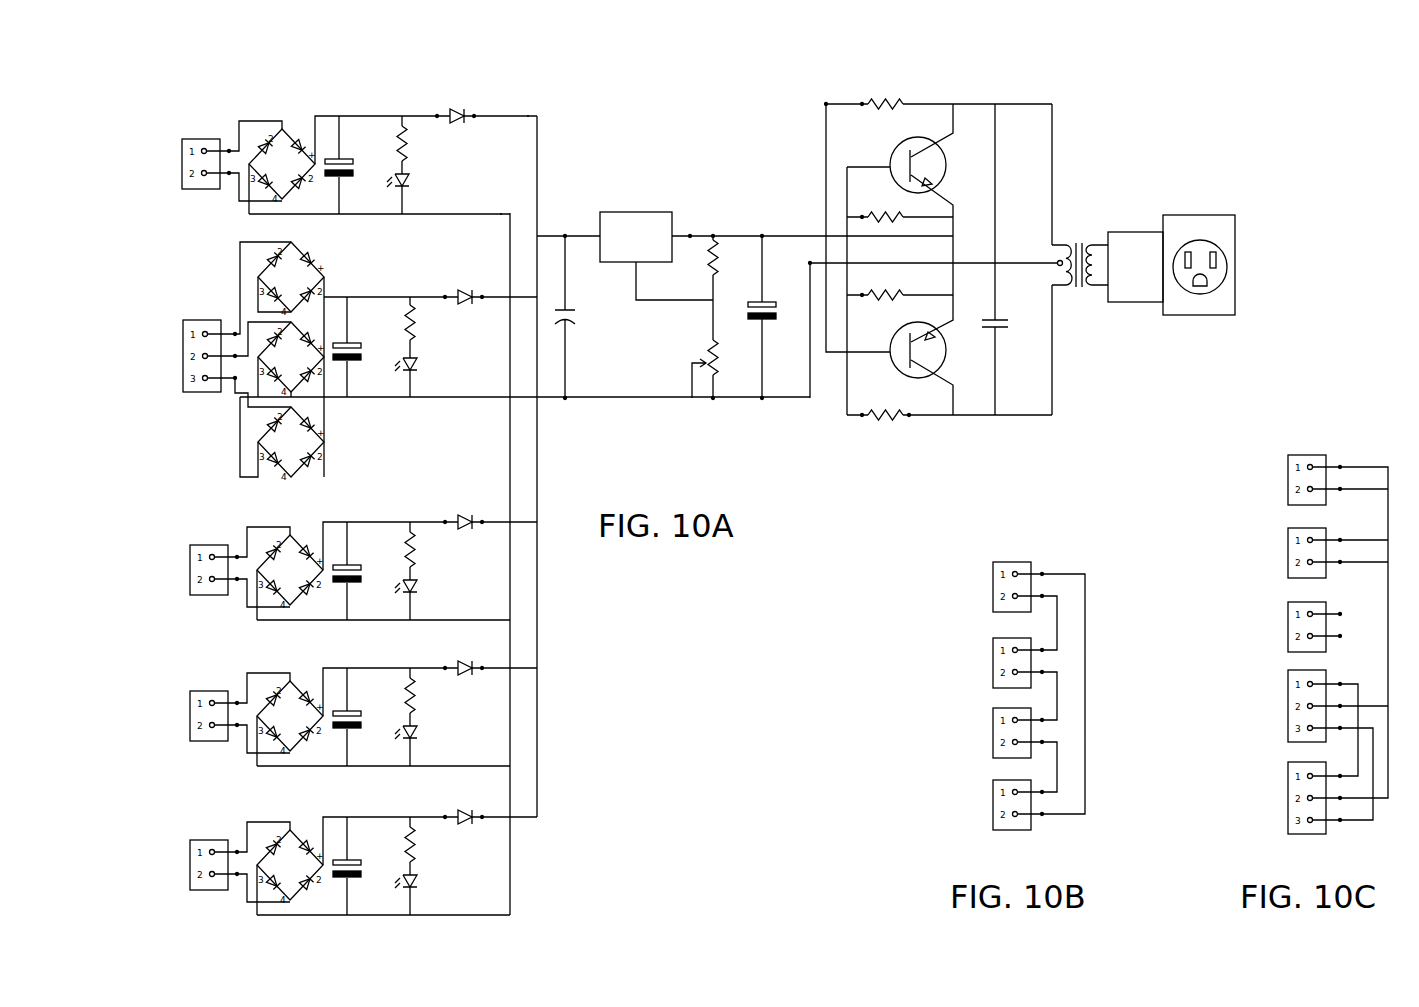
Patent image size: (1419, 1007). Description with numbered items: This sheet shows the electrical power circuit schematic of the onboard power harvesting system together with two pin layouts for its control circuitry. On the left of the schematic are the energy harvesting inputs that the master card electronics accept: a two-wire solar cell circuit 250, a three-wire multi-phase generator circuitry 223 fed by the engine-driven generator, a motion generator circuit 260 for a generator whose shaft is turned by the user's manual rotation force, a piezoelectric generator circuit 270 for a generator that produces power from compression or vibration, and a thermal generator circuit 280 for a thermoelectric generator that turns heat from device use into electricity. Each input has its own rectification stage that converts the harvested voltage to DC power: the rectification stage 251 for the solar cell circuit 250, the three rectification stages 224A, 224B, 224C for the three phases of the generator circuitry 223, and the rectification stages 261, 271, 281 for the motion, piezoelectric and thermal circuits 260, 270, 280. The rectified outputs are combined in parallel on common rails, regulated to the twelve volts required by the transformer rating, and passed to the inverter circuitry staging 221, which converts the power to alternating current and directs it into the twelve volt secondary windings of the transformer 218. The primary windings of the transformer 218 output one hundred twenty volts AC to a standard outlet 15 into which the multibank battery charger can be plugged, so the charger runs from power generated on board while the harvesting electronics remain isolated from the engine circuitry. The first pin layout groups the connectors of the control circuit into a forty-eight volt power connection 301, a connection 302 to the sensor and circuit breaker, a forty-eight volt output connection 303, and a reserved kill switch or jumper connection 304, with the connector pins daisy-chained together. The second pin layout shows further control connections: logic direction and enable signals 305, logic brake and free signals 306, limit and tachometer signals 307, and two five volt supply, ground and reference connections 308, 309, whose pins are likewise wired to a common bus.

In FIG. 10A, the solar cell circuit 250 is at (172, 80).
In FIG. 10A, the rectification stage 251 is at (296, 132).
In FIG. 10A, the generator circuitry 223 is at (172, 225).
In FIG. 10A, the rectification stage 224A is at (321, 260).
In FIG. 10A, the rectification stage 224B is at (308, 378).
In FIG. 10A, the rectification stage 224C is at (308, 470).
In FIG. 10A, the motion generator circuit 260 is at (172, 497).
In FIG. 10A, the rectification stage 261 is at (300, 543).
In FIG. 10A, the piezoelectric generator circuit 270 is at (172, 645).
In FIG. 10A, the rectification stage 271 is at (302, 688).
In FIG. 10A, the thermal generator circuit 280 is at (172, 782).
In FIG. 10A, the rectification stage 281 is at (302, 838).
In FIG. 10A, the inverter circuitry staging 221 is at (1045, 430).
In FIG. 10A, the transformer 218 is at (1085, 240).
In FIG. 10A, the AC outlet 15 is at (1226, 249).
In FIG. 10B, the 48V power connector J6 301 is at (932, 550).
In FIG. 10B, the sensor/circuit breaker connector J7 302 is at (932, 632).
In FIG. 10B, the 48V output connector J8 303 is at (932, 700).
In FIG. 10B, the kill switch/jumper connector J9 304 is at (932, 868).
In FIG. 10C, the logic DIR/ENA connector J1 305 is at (1225, 440).
In FIG. 10C, the logic BRK/FRE connector J2 306 is at (1225, 518).
In FIG. 10C, the signals LMT/TAC connector J3 307 is at (1225, 592).
In FIG. 10C, the VIN/GND/VRF connector J4 308 is at (1225, 668).
In FIG. 10C, the VIN/GND/VRF connector J5 309 is at (1225, 758).